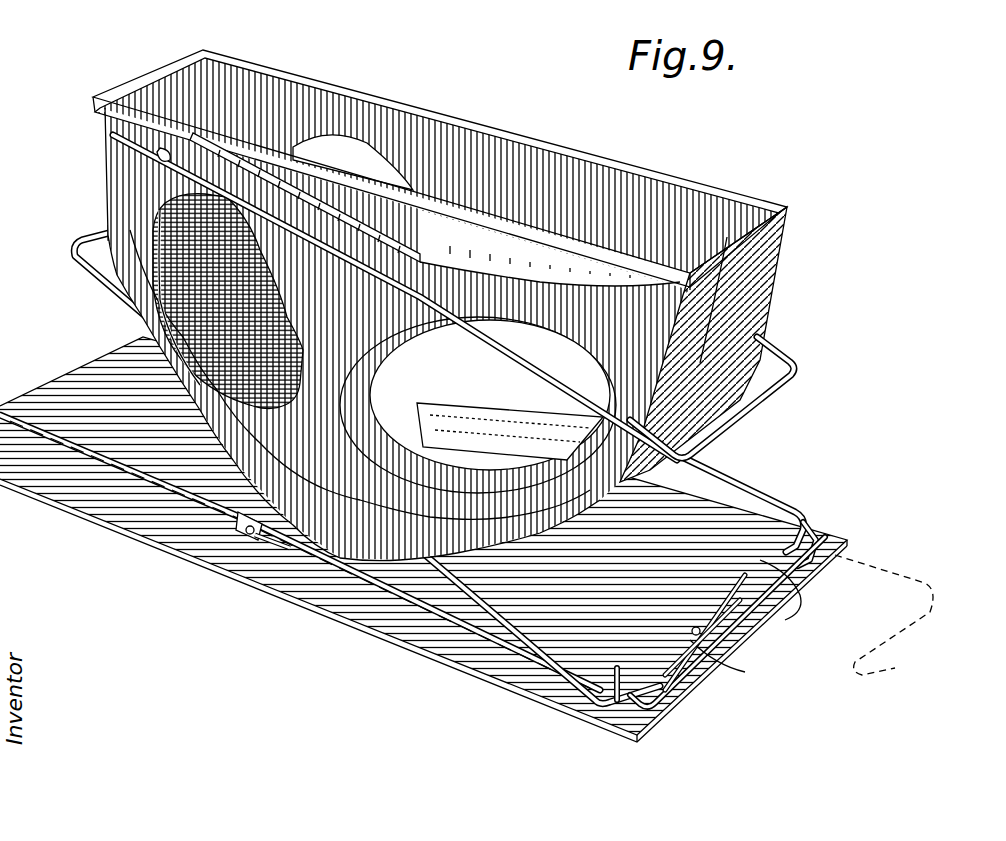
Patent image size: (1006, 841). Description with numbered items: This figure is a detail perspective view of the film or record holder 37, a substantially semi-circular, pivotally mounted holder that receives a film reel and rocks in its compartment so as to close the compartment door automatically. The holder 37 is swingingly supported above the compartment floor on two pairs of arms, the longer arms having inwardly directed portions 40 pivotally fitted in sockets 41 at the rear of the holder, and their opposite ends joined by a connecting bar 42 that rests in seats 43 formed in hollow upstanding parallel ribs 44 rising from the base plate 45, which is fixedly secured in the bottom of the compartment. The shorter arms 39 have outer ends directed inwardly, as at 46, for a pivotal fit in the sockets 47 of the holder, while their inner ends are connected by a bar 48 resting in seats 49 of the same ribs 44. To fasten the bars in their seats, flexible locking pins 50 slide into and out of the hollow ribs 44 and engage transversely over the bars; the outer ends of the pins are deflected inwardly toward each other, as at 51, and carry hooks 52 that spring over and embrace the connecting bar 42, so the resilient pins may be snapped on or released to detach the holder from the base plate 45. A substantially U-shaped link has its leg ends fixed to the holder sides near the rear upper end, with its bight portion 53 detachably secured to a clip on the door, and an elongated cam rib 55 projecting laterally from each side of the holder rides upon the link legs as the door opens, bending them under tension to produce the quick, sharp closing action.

The film holder 37 is at (710, 164).
The arms 39 is at (283, 552).
The inwardly directed portions 40 is at (87, 243).
The sockets 41 is at (110, 230).
The connecting bar 42 is at (705, 645).
The seats 43 is at (812, 540).
The hollow upstanding parallel ribs 44 is at (577, 660).
The base plate 45 is at (383, 630).
The inwardly directed outer ends 46 is at (580, 520).
The sockets 47 is at (584, 506).
The bar 48 is at (160, 530).
The seats 49 is at (247, 522).
The locking pins 50 is at (800, 520).
The deflected portions 51 is at (790, 578).
The hooks 52 is at (705, 633).
The bight portion 53 is at (770, 393).
The cam rib 55 is at (473, 283).